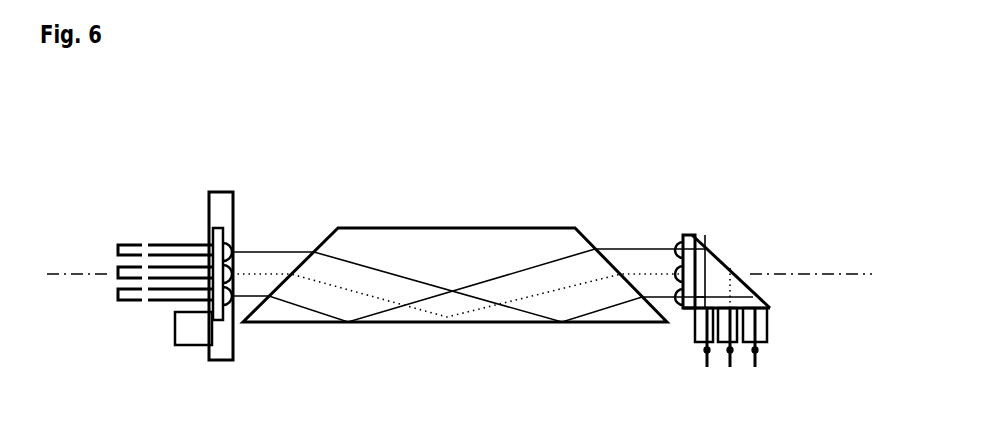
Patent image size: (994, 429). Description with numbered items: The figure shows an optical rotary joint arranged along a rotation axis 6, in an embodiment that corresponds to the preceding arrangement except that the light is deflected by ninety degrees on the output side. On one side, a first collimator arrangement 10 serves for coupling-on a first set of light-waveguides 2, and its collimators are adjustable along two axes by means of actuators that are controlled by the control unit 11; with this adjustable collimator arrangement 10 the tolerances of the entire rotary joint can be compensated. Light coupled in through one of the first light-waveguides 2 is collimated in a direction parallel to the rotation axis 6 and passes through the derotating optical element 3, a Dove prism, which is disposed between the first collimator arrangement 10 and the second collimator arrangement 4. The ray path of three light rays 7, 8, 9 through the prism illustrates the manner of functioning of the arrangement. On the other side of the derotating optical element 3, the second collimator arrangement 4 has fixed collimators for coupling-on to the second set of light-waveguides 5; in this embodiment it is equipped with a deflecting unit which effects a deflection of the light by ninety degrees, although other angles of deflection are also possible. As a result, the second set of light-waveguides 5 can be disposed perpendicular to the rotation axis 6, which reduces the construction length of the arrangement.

The first set of light-waveguides 2 is at (120, 243).
The derotating optical element 3 is at (556, 205).
The second collimator arrangement 4 is at (722, 245).
The second set of light-waveguides 5 is at (690, 357).
The rotation axis 6 is at (92, 287).
The light ray 7 is at (240, 247).
The light ray 8 is at (252, 272).
The light ray 9 is at (262, 292).
The first collimator arrangement 10 is at (215, 188).
The control unit 11 is at (193, 328).